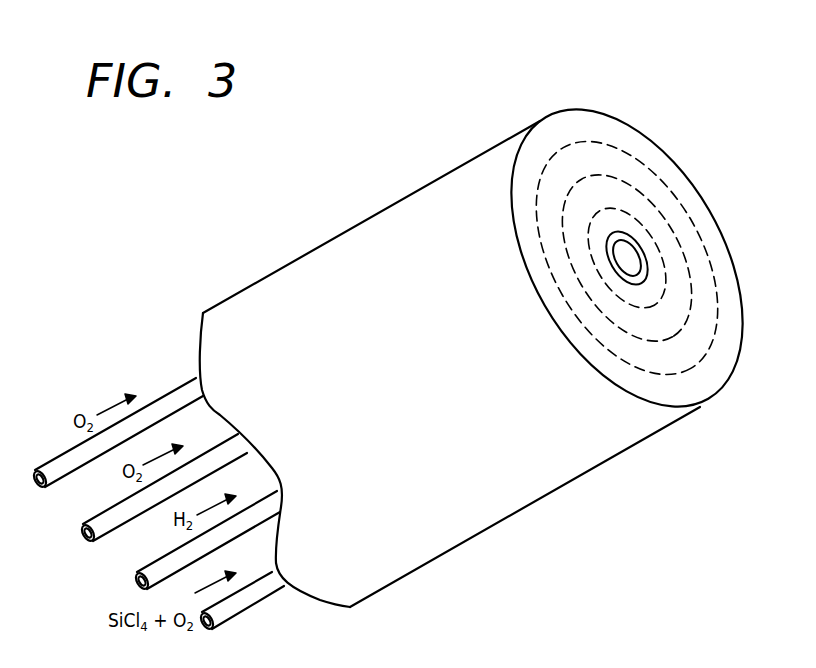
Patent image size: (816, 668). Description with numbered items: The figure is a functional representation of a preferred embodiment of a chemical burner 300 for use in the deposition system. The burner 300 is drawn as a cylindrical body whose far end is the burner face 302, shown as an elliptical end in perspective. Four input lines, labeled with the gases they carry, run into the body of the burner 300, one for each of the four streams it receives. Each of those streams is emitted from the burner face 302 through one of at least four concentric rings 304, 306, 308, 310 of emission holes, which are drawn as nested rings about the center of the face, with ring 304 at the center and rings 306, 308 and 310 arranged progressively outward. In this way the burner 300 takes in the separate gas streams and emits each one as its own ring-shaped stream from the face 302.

The burner 300 is at (292, 197).
The burner face 302 is at (575, 130).
The concentric ring of emission holes 304 is at (618, 237).
The concentric ring of emission holes 306 is at (667, 274).
The concentric ring of emission holes 308 is at (663, 213).
The concentric ring of emission holes 310 is at (633, 156).